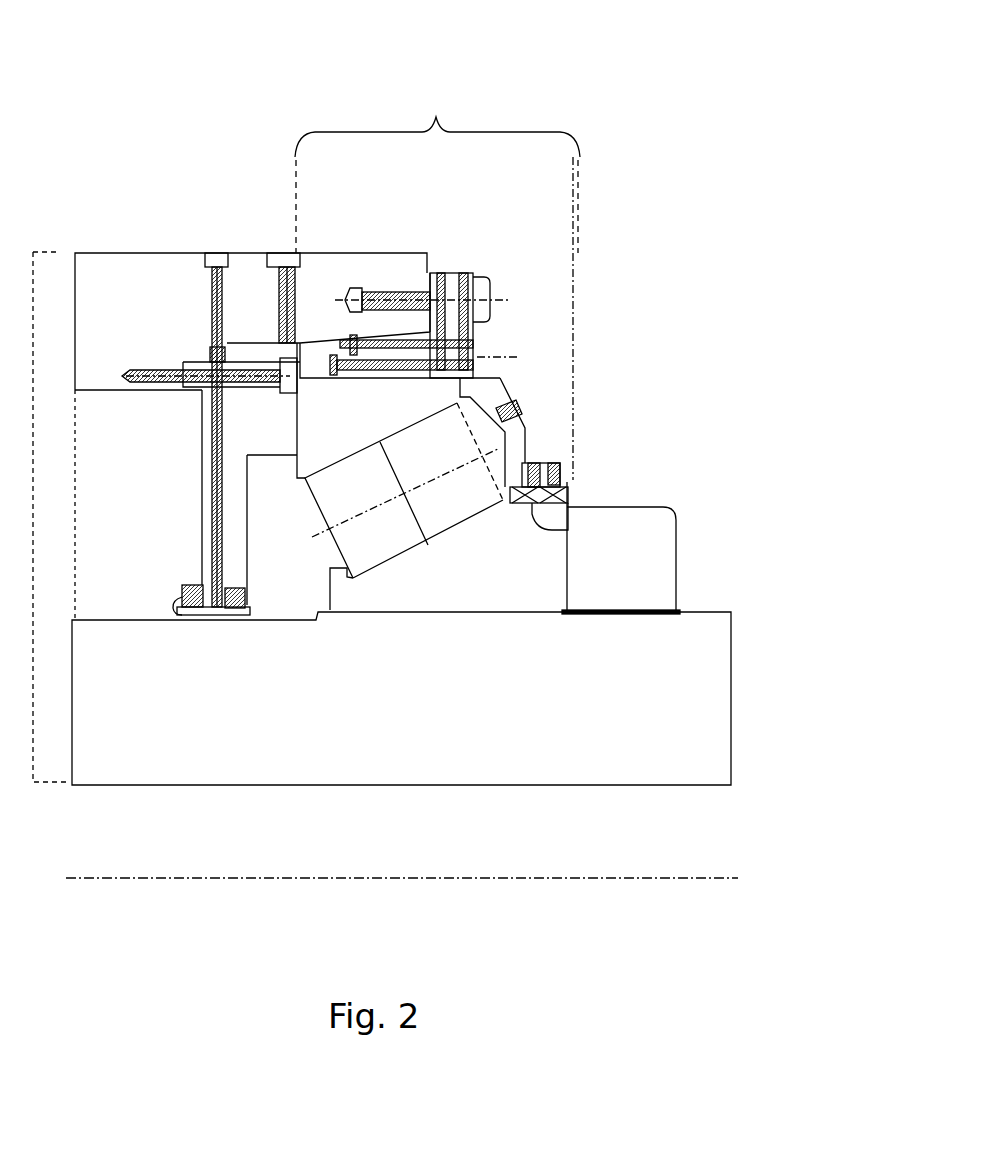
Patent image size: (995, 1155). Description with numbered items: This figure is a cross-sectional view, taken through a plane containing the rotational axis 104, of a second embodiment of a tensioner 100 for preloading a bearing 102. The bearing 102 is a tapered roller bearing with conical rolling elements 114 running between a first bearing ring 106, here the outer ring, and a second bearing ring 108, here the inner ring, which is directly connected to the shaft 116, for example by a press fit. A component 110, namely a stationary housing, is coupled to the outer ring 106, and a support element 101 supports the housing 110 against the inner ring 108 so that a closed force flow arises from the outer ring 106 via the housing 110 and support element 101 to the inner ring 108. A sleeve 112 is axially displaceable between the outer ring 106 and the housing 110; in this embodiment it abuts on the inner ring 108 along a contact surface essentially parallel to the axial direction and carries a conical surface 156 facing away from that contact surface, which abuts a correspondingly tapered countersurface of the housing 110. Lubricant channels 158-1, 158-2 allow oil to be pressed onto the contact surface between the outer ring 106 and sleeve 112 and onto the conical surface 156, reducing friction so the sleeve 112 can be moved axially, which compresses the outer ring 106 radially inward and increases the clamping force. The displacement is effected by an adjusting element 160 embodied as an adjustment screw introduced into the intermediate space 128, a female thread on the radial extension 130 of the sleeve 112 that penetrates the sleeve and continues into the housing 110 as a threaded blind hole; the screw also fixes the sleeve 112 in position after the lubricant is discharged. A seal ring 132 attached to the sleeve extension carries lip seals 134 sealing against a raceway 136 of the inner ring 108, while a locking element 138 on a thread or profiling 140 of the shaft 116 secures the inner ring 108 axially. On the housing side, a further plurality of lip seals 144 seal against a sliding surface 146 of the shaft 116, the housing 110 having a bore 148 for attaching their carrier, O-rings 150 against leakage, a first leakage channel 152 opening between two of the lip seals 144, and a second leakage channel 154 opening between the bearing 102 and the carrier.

The tensioner 100 is at (661, 86).
The support element 101 is at (53, 253).
The bearing 102 is at (437, 281).
The rotational axis 104 is at (650, 878).
The first bearing ring 106 is at (350, 437).
The second bearing ring 108 is at (510, 589).
The component 110 is at (120, 253).
The sleeve 112 is at (323, 350).
The rolling elements 114 is at (443, 464).
The shaft 116 is at (391, 769).
The intermediate space 128 is at (352, 260).
The radial extension 130 is at (477, 340).
The seal ring 132 is at (505, 388).
The lip seals 134 is at (565, 490).
The raceway 136 is at (568, 527).
The locking element 138 is at (633, 577).
The profiling 140 is at (613, 614).
The further plurality of lip seals 144 is at (253, 598).
The sliding surface 146 is at (207, 617).
The bore 148 is at (137, 372).
The O-rings 150 is at (211, 350).
The first leakage channel 152 is at (208, 267).
The second leakage channel 154 is at (250, 270).
The conical surface 156 is at (400, 330).
The lubricant channel 158-1 is at (441, 273).
The lubricant channel 158-2 is at (464, 273).
The adjusting element 160 is at (490, 282).